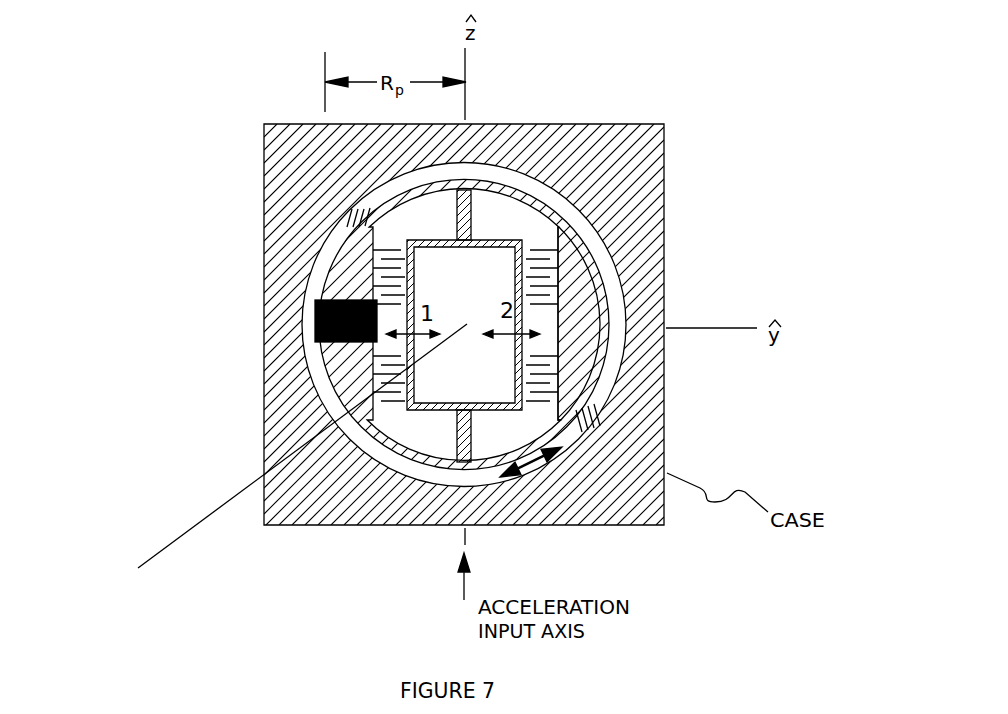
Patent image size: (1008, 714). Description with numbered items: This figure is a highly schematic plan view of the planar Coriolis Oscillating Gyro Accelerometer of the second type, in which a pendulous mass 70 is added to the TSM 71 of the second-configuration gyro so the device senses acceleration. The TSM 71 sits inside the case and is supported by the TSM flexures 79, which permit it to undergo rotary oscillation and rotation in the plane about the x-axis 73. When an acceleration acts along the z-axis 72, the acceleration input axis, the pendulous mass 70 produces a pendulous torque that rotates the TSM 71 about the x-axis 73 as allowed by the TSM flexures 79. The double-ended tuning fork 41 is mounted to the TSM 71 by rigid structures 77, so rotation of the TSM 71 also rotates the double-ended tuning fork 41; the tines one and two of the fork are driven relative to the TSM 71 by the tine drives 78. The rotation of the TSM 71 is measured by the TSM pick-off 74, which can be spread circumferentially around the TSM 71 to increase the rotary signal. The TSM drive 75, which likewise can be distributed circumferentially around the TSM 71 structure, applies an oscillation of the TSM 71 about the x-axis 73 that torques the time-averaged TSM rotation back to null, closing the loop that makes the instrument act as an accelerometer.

The double-ended tuning fork 41 is at (581, 411).
The pendulous mass 70 is at (313, 345).
The TSM 71 is at (607, 285).
The z-axis 72 is at (464, 335).
The x-axis 73 is at (136, 573).
The TSM pick-off 74 is at (342, 226).
The TSM drive 75 is at (578, 462).
The rigid structures 77 is at (482, 217).
The tine drives 78 is at (543, 248).
The TSM flexures 79 is at (466, 184).